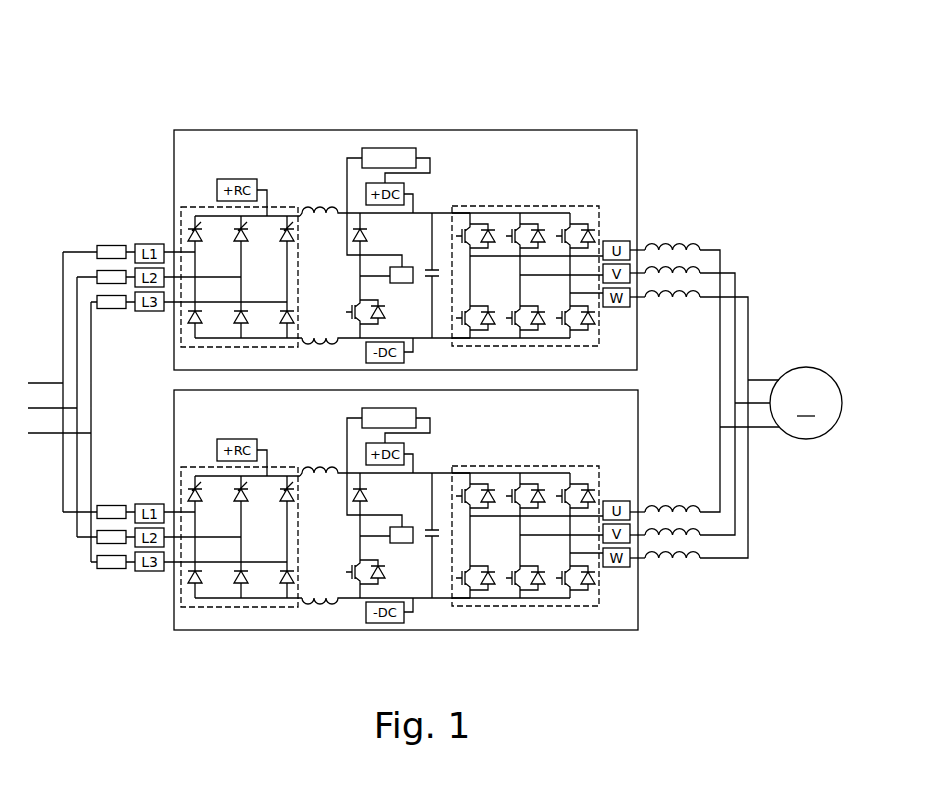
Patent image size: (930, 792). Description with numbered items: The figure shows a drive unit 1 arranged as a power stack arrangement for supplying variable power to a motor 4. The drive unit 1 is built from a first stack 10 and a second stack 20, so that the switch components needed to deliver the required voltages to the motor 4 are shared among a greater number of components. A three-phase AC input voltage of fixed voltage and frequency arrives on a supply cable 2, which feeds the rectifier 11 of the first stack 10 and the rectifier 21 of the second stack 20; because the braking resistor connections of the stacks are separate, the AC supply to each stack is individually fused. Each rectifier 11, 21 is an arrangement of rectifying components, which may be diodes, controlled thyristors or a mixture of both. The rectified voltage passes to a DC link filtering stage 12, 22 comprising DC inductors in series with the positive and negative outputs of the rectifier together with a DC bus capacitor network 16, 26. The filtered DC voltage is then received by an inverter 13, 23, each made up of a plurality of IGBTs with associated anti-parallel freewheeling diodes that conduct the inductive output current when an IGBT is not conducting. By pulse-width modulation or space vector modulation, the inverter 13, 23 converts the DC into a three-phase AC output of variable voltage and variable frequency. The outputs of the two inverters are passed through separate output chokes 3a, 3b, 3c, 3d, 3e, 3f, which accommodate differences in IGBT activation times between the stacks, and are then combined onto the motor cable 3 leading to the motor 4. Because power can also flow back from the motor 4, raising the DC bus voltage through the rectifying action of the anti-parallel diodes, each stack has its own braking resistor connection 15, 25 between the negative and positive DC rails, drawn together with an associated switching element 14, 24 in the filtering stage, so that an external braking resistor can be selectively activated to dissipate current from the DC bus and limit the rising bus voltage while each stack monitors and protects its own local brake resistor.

The drive unit 1 is at (594, 83).
The supply cable 2 is at (48, 383).
The motor cable 3 is at (765, 378).
The output choke 3a is at (670, 246).
The output choke 3b is at (703, 272).
The output choke 3c is at (675, 300).
The output choke 3d is at (672, 507).
The output choke 3e is at (703, 533).
The output choke 3f is at (678, 561).
The motor 4 is at (806, 403).
The first stack 10 is at (189, 127).
The rectifier 11 is at (192, 206).
The DC link filtering stage 12 is at (321, 157).
The inverter 13 is at (543, 203).
The brake chopper switch 14 is at (347, 312).
The braking resistor connection 15 is at (403, 266).
The DC bus capacitor network 16 is at (436, 268).
The second stack 20 is at (171, 600).
The rectifier 21 is at (218, 607).
The DC link filtering stage 22 is at (349, 618).
The inverter 23 is at (558, 607).
The brake chopper switch 24 is at (378, 588).
The braking resistor connection 25 is at (413, 547).
The DC bus capacitor network 26 is at (433, 522).